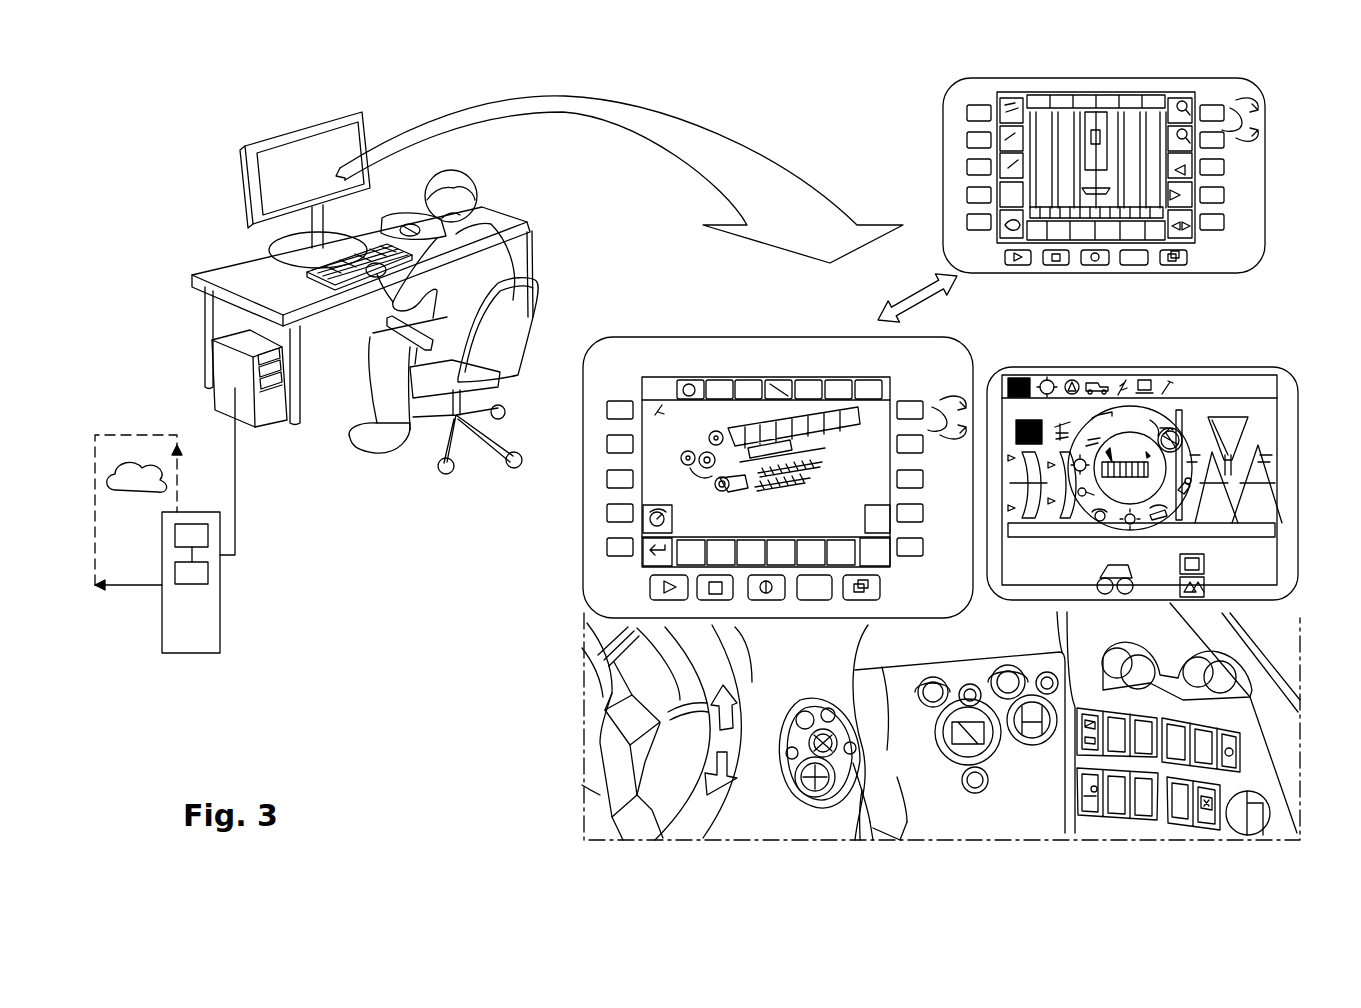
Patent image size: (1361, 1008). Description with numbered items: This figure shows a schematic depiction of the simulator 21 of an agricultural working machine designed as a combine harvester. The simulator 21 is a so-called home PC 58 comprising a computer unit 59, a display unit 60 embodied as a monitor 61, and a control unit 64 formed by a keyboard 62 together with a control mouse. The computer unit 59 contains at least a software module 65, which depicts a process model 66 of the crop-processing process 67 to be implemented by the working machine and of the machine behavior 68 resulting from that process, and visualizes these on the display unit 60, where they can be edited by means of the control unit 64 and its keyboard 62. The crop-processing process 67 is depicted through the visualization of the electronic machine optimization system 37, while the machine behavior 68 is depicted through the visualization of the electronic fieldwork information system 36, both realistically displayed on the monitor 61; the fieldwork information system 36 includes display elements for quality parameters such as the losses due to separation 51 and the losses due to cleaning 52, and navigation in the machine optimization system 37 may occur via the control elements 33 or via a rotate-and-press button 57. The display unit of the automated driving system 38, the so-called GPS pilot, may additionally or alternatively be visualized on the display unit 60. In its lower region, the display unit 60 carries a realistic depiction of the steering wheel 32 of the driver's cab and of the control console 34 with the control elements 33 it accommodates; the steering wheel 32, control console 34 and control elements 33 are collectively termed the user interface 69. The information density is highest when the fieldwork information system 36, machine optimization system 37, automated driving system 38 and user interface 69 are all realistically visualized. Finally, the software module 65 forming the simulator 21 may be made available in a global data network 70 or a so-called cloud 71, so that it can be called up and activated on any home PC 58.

The simulator 21 is at (477, 657).
The steering wheel 32 is at (700, 805).
The control elements 33 is at (947, 762).
The control console 34 is at (1044, 802).
The electronic fieldwork information system 36 is at (1142, 443).
The electronic machine optimization system 37 is at (778, 452).
The automated driving system 38 is at (1243, 262).
The losses due to separation 51 is at (1218, 511).
The losses due to cleaning 52 is at (1258, 511).
The rotate-and-press button 57 is at (966, 395).
The home PC 58 is at (350, 320).
The computer unit 59 is at (240, 336).
The display unit 60 is at (304, 177).
The monitor 61 is at (296, 158).
The keyboard 62 is at (345, 290).
The control unit 64 is at (388, 212).
The software module 65 is at (253, 582).
The process model 66 is at (190, 535).
The crop-processing process 67 is at (870, 388).
The machine behavior 68 is at (190, 572).
The user interface 69 is at (572, 833).
The global data network 70 is at (139, 560).
The cloud 71 is at (135, 462).